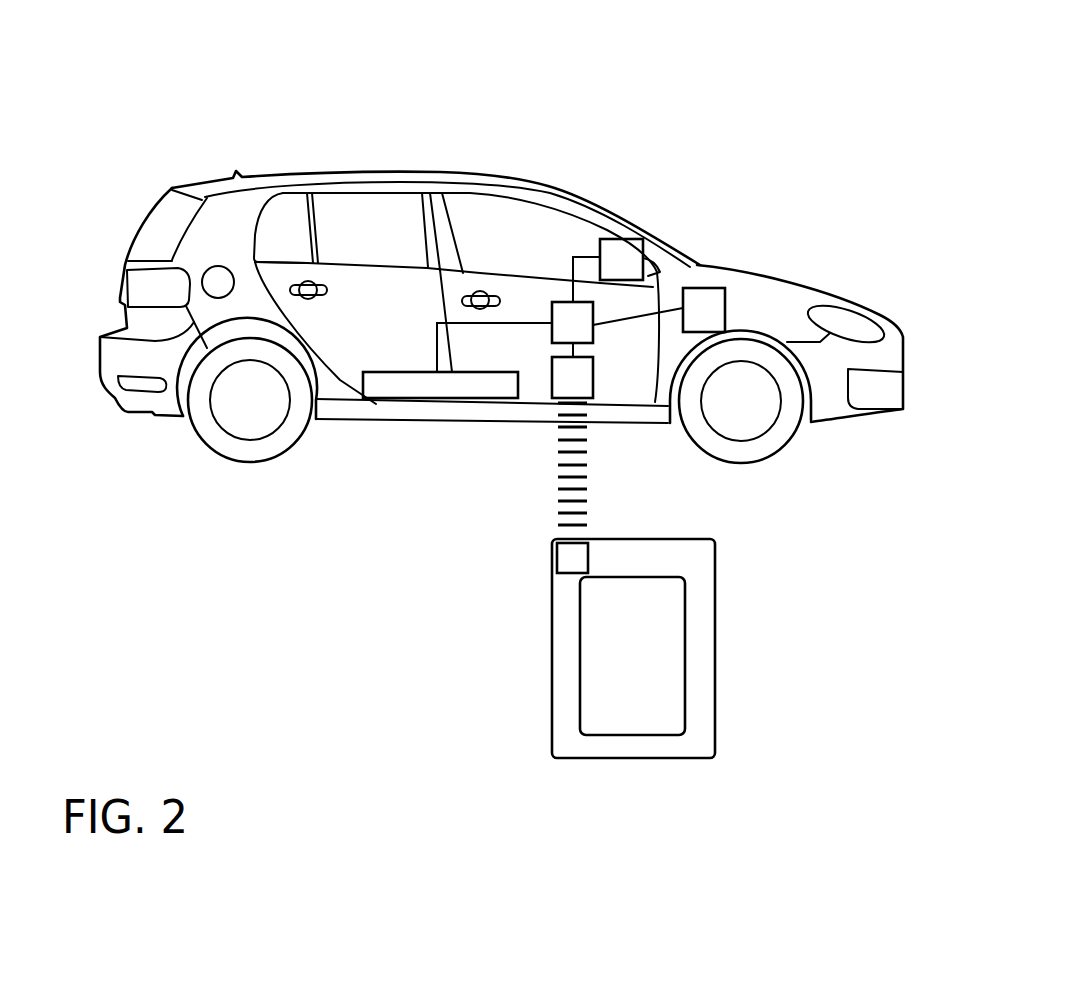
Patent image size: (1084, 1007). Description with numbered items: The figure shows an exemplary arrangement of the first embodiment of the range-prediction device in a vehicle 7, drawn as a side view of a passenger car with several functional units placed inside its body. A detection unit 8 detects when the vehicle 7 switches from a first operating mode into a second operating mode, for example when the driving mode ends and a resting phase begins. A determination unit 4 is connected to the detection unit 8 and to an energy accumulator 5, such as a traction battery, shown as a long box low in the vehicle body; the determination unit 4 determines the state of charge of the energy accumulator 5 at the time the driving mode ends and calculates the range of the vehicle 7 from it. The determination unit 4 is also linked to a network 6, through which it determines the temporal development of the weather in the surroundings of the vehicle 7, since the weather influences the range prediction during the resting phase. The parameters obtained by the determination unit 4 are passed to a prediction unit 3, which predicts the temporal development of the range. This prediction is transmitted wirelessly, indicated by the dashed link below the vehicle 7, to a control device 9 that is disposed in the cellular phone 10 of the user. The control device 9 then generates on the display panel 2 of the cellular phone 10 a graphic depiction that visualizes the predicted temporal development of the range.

The vehicle 7 is at (682, 107).
The network 6 is at (642, 257).
The determination unit 4 is at (515, 337).
The prediction unit 3 is at (572, 377).
The detection unit 8 is at (715, 320).
The energy accumulator 5 is at (499, 398).
The cellular phone 10 is at (713, 614).
The control device 9 is at (572, 558).
The display panel 2 is at (640, 665).